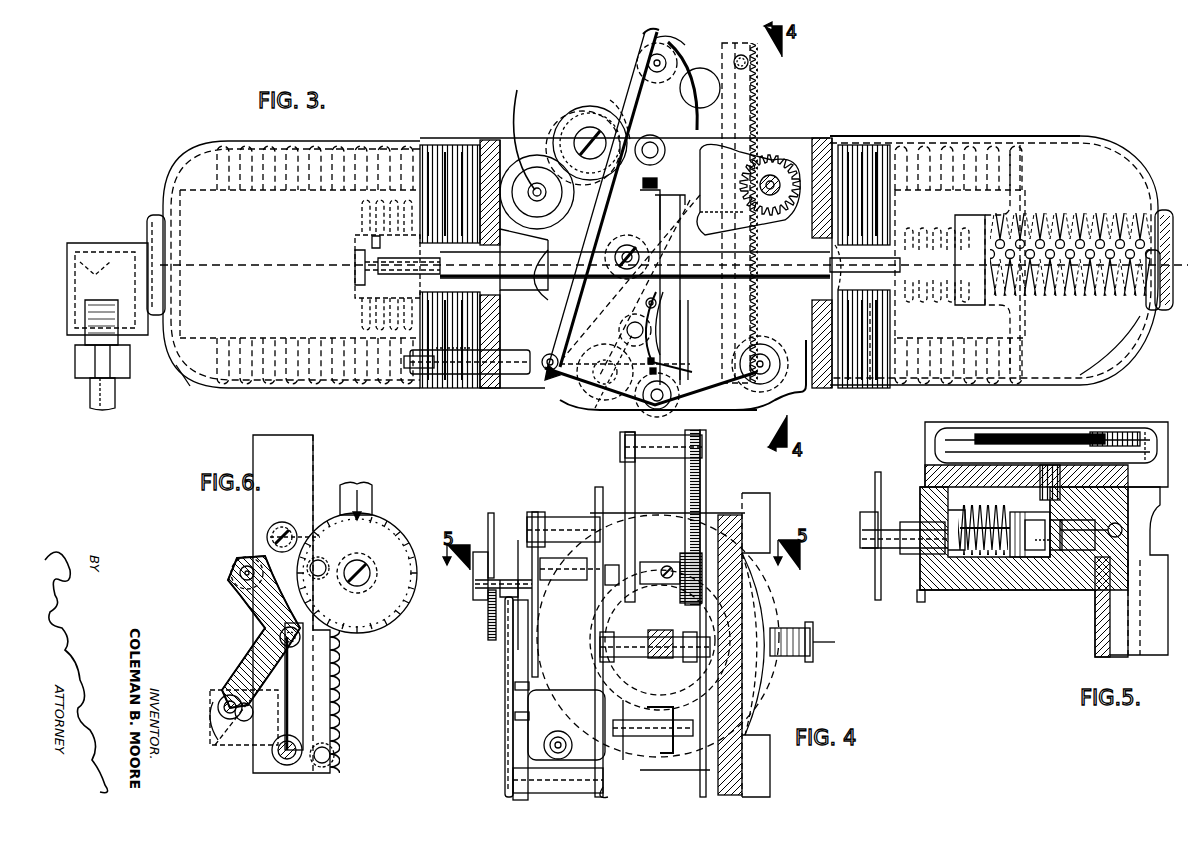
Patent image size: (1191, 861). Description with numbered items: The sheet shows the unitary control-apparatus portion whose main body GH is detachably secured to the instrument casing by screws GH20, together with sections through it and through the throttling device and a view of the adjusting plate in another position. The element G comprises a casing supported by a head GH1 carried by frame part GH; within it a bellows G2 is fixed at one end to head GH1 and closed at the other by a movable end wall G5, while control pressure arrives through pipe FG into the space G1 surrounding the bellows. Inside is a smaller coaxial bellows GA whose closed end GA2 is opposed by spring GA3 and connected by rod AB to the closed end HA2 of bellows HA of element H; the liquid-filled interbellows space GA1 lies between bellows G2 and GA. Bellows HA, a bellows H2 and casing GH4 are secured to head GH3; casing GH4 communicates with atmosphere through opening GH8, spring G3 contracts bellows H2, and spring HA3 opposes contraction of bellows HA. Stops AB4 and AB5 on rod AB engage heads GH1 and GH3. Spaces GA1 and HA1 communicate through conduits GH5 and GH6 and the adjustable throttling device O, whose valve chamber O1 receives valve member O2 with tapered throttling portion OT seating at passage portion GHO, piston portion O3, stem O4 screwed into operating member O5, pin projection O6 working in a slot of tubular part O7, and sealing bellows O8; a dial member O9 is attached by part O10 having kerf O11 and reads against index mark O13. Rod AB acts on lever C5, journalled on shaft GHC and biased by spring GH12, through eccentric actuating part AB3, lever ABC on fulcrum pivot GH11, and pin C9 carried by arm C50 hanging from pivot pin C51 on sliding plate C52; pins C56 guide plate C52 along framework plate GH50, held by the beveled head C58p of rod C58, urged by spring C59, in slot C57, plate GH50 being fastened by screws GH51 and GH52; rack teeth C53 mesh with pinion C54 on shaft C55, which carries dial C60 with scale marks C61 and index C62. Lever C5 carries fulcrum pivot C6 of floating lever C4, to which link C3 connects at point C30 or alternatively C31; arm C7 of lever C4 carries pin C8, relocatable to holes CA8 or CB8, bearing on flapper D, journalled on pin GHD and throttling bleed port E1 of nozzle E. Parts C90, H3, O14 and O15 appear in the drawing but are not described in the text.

In FIG. 3, the element G is at (225, 123).
In FIG. 3, the end wall G5 is at (172, 210).
In FIG. 3, the bellows G2 is at (358, 160).
In FIG. 5, the bellows G2 is at (1140, 432).
In FIG. 3, the space G1 is at (195, 380).
In FIG. 5, the space G1 is at (955, 432).
In FIG. 3, the pipe FG is at (112, 400).
In FIG. 3, the bellows GA is at (360, 212).
In FIG. 5, the bellows GA is at (1020, 432).
In FIG. 3, the spring GA3 is at (370, 233).
In FIG. 3, the closed end GA2 is at (356, 254).
In FIG. 3, the rod AB is at (370, 270).
In FIG. 4, the rod AB is at (658, 630).
In FIG. 3, the interbellows space GA1 is at (440, 148).
In FIG. 5, the interbellows space GA1 is at (1108, 432).
In FIG. 3, the conduit GH5 is at (490, 140).
In FIG. 5, the conduit GH5 is at (1058, 432).
In FIG. 3, the head GH1 is at (478, 155).
In FIG. 5, the head GH1 is at (925, 478).
In FIG. 3, the instrument frame member GH is at (535, 188).
In FIG. 4, the instrument frame member GH is at (760, 530).
In FIG. 3, the pin GHD is at (540, 184).
In FIG. 3, the conduit GH6 is at (800, 290).
In FIG. 4, the conduit GH6 is at (770, 600).
In FIG. 5, the conduit GH6 is at (1100, 645).
In FIG. 3, the stop AB4 is at (520, 290).
In FIG. 3, the connecting link C3 is at (618, 132).
In FIG. 4, the connecting link C3 is at (505, 645).
In FIG. 3, the screws GH20 is at (585, 130).
In FIG. 3, the supporting shaft GHC is at (620, 110).
In FIG. 4, the supporting shaft GHC is at (555, 522).
In FIG. 3, the spring GH12 is at (650, 105).
In FIG. 3, the supporting pivot pin C51 is at (660, 50).
In FIG. 4, the supporting pivot pin C51 is at (624, 445).
In FIG. 6, the supporting pivot pin C51 is at (240, 572).
In FIG. 3, the cam C90 is at (710, 78).
In FIG. 3, the plate C52 is at (742, 52).
In FIG. 6, the plate C52 is at (268, 540).
In FIG. 3, the pins C56 is at (750, 68).
In FIG. 6, the pins C56 is at (322, 555).
In FIG. 3, the shaft C55 is at (770, 175).
In FIG. 4, the shaft C55 is at (660, 566).
In FIG. 6, the shaft C55 is at (370, 575).
In FIG. 3, the pinion C54 is at (795, 160).
In FIG. 4, the pinion C54 is at (685, 556).
In FIG. 3, the head GH3 is at (820, 138).
In FIG. 3, the pin C9 is at (650, 208).
In FIG. 4, the pin C9 is at (540, 555).
In FIG. 6, the pin C9 is at (230, 695).
In FIG. 3, the flapper D is at (681, 292).
In FIG. 4, the flapper D is at (545, 665).
In FIG. 3, the lever ABC is at (650, 233).
In FIG. 4, the lever ABC is at (650, 760).
In FIG. 6, the lever ABC is at (212, 735).
In FIG. 3, the actuating part AB3 is at (626, 270).
In FIG. 4, the actuating part AB3 is at (625, 658).
In FIG. 3, the arm C7 is at (628, 330).
In FIG. 4, the arm C7 is at (515, 716).
In FIG. 3, the pin C8 is at (646, 303).
In FIG. 4, the pin C8 is at (515, 686).
In FIG. 3, the fulcrum pivot GH11 is at (615, 355).
In FIG. 4, the fulcrum pivot GH11 is at (690, 700).
In FIG. 3, the threaded hole CA8 is at (658, 345).
In FIG. 3, the lever C5 is at (688, 340).
In FIG. 4, the lever C5 is at (596, 497).
In FIG. 6, the lever C5 is at (245, 745).
In FIG. 3, the threaded hole CB8 is at (660, 362).
In FIG. 3, the connection point C30 is at (550, 372).
In FIG. 3, the nozzle element E is at (560, 385).
In FIG. 4, the nozzle element E is at (545, 745).
In FIG. 3, the bleed port E1 is at (430, 375).
In FIG. 3, the fulcrum pivot C6 is at (657, 403).
In FIG. 4, the fulcrum pivot C6 is at (612, 800).
In FIG. 3, the valve operating lever C4 is at (620, 400).
In FIG. 4, the valve operating lever C4 is at (510, 792).
In FIG. 3, the connection point C31 is at (760, 354).
In FIG. 3, the framework plate GH50 is at (740, 411).
In FIG. 4, the framework plate GH50 is at (705, 478).
In FIG. 6, the framework plate GH50 is at (305, 450).
In FIG. 3, the stop AB5 is at (830, 275).
In FIG. 3, the spring HA3 is at (825, 300).
In FIG. 3, the element H is at (1085, 128).
In FIG. 3, the bellows H2 is at (860, 145).
In FIG. 3, the bellows HA is at (898, 150).
In FIG. 3, the closed end HA2 is at (990, 210).
In FIG. 3, the spring G3 is at (1100, 222).
In FIG. 3, the end cap H3 is at (1150, 295).
In FIG. 3, the opening GH8 is at (1145, 318).
In FIG. 3, the casing GH4 is at (955, 136).
In FIG. 3, the interbellows space HA1 is at (880, 388).
In FIG. 4, the arm C50 is at (625, 468).
In FIG. 6, the arm C50 is at (262, 612).
In FIG. 4, the rack C53 is at (688, 500).
In FIG. 6, the rack C53 is at (345, 695).
In FIG. 4, the spring C59 is at (785, 628).
In FIG. 4, the rod C58 is at (833, 640).
In FIG. 4, the beveled head end C58p is at (688, 662).
In FIG. 6, the beveled head end C58p is at (280, 637).
In FIG. 4, the plate O15 is at (488, 522).
In FIG. 4, the shaft O14 is at (480, 565).
In FIG. 4, the index mark O13 is at (488, 600).
In FIG. 6, the dial C60 is at (368, 520).
In FIG. 6, the scale marks C61 is at (405, 535).
In FIG. 6, the index point C62 is at (355, 500).
In FIG. 6, the securing screw GH52 is at (270, 525).
In FIG. 6, the securing screw GH51 is at (290, 765).
In FIG. 6, the slot C57 is at (305, 660).
In FIG. 5, the tapered throttling portion OT is at (1130, 521).
In FIG. 5, the passage end portion GHO is at (1088, 565).
In FIG. 5, the adjustable throttling device O is at (915, 615).
In FIG. 5, the dial member O9 is at (874, 478).
In FIG. 5, the kerf O11 is at (858, 530).
In FIG. 5, the valve operating part O10 is at (862, 538).
In FIG. 5, the valve operating member O5 is at (925, 548).
In FIG. 5, the tubular part O7 is at (948, 578).
In FIG. 5, the bellows member O8 is at (968, 578).
In FIG. 5, the pin projection O6 is at (985, 578).
In FIG. 5, the stem portion O4 is at (1012, 578).
In FIG. 5, the piston portion O3 is at (1038, 560).
In FIG. 5, the valve member O2 is at (1050, 570).
In FIG. 5, the valve chamber O1 is at (1060, 560).